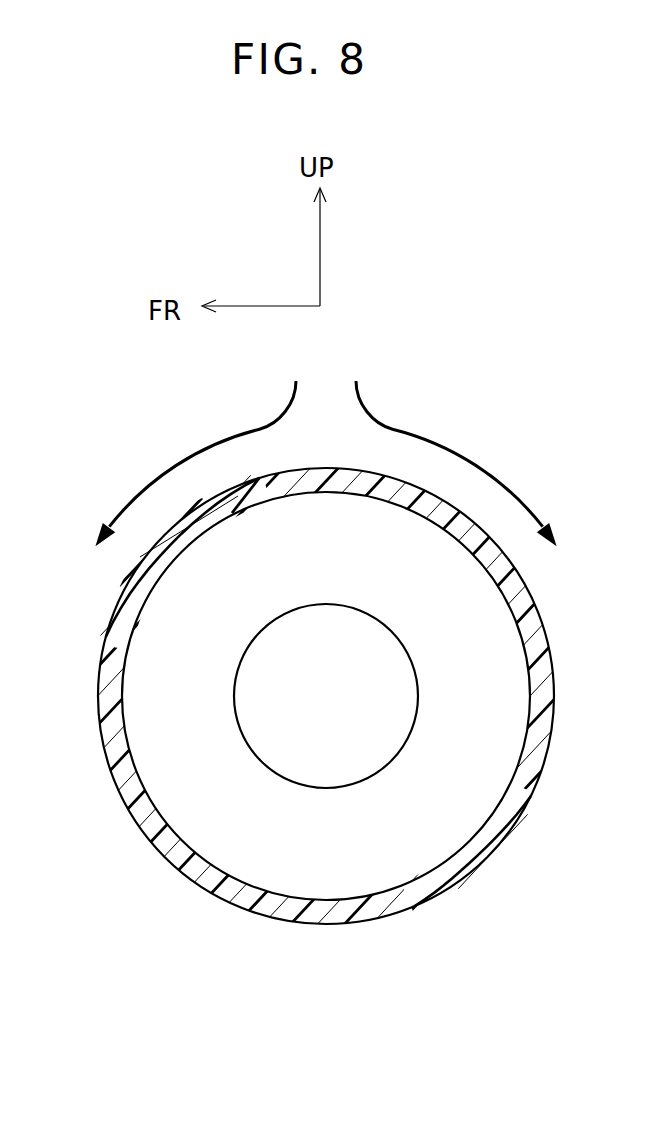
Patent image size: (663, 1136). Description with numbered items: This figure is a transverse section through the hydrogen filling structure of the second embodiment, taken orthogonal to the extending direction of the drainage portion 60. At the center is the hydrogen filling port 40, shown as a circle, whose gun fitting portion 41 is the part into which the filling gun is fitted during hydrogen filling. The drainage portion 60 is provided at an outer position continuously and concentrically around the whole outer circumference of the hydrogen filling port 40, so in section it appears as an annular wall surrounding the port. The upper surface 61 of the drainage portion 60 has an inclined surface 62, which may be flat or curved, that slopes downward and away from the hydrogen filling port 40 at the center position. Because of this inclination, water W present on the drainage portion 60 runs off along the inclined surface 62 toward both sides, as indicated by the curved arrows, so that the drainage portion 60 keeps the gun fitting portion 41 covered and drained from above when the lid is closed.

The hydrogen filling port 40 is at (364, 696).
The gun fitting portion 41 is at (421, 722).
The drainage portion 60 is at (297, 683).
The upper surface 61 is at (344, 468).
The inclined surface 62 is at (202, 506).
The water W is at (210, 442).